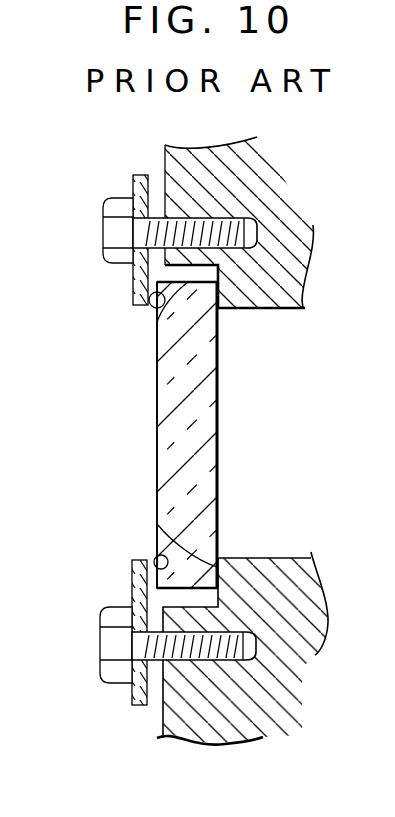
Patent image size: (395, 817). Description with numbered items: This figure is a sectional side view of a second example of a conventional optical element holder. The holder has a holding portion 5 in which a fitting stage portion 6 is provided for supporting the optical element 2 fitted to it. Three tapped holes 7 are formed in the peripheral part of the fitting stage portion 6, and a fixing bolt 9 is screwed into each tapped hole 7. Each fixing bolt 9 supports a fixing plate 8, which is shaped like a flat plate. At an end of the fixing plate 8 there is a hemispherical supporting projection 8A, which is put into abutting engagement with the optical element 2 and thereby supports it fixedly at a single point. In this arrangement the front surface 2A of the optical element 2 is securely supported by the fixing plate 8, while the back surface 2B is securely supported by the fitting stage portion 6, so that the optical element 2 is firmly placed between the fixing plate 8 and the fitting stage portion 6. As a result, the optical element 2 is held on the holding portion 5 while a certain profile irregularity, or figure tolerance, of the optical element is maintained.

The optical element 2 is at (192, 435).
The front surface 2A is at (157, 455).
The back surface 2B is at (219, 411).
The holding portion 5 is at (268, 305).
The fitting stage portion 6 is at (157, 358).
The tapped hole 7 is at (132, 203).
The fixing plate 8 is at (134, 294).
The supporting projection 8A is at (152, 306).
The fixing bolt 9 is at (104, 232).